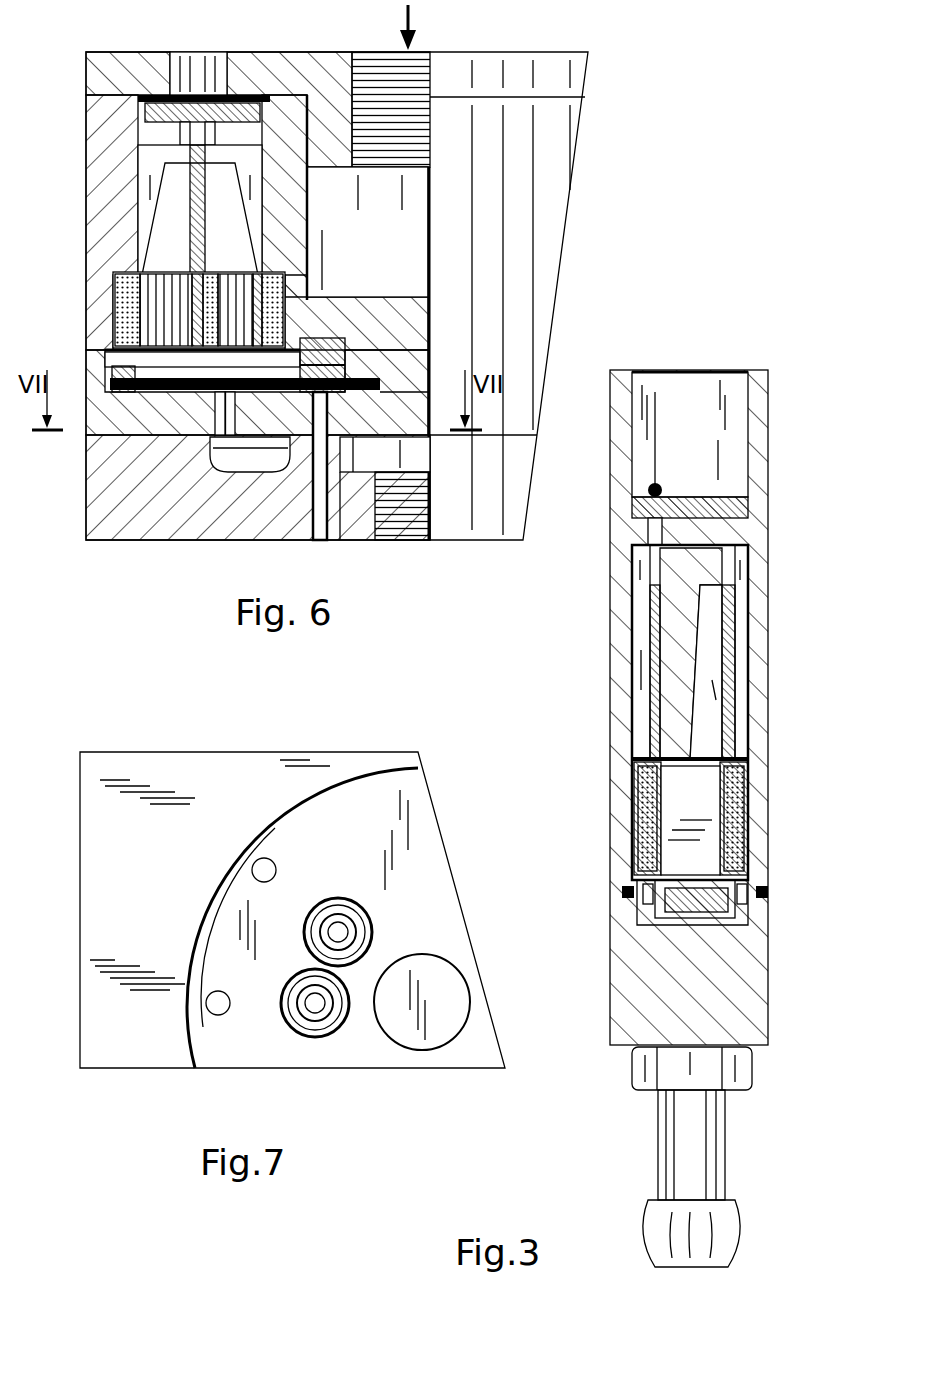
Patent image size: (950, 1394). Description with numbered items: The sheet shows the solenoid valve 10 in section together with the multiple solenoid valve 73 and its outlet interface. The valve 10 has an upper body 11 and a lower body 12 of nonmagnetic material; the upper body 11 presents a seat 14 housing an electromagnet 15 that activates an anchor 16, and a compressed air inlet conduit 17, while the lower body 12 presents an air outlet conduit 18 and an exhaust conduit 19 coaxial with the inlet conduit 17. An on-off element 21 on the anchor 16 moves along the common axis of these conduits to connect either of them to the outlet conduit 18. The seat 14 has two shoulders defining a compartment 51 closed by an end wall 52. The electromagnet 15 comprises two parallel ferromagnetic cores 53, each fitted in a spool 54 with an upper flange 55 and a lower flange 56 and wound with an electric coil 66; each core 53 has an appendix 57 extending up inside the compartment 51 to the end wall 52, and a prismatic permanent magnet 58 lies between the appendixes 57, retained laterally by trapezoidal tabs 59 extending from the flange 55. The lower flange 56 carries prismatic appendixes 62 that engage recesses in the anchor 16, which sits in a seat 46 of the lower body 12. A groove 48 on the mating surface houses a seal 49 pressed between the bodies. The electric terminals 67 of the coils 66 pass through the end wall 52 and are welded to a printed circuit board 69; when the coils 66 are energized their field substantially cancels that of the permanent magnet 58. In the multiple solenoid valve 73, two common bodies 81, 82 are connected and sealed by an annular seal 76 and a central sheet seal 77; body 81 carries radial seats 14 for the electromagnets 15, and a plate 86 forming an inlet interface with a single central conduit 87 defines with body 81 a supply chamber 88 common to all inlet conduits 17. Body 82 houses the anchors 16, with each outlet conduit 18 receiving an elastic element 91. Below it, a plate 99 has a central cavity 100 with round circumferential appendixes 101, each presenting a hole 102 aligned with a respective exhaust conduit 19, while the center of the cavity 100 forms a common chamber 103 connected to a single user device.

In FIG. 3, the three-way solenoid valve 10 is at (797, 750).
In FIG. 3, the upper body 11 is at (755, 607).
In FIG. 3, the lower body 12 is at (750, 1010).
In FIG. 3, the seat 14 is at (635, 836).
In FIG. 6, the electromagnet 15 is at (110, 302).
In FIG. 3, the electromagnet 15 is at (757, 812).
In FIG. 6, the anchor 16 is at (170, 375).
In FIG. 3, the anchor 16 is at (660, 928).
In FIG. 6, the compressed air inlet conduit 17 is at (318, 338).
In FIG. 6, the air outlet conduit 18 is at (237, 415).
In FIG. 6, the exhaust conduit 19 is at (365, 410).
In FIG. 3, the exhaust conduit 19 is at (655, 1135).
In FIG. 6, the on-off element 21 is at (348, 340).
In FIG. 3, the seat 46 is at (763, 903).
In FIG. 3, the groove 48 is at (770, 896).
In FIG. 3, the seal 49 is at (633, 900).
In FIG. 3, the compartment 51 is at (750, 577).
In FIG. 3, the end wall 52 is at (750, 513).
In FIG. 3, the core 53 is at (670, 792).
In FIG. 3, the spool 54 is at (757, 840).
In FIG. 3, the upper flange 55 is at (648, 766).
In FIG. 3, the lower flange 56 is at (643, 878).
In FIG. 3, the appendix 57 is at (707, 710).
In FIG. 6, the permanent magnet 58 is at (187, 197).
In FIG. 3, the permanent magnet 58 is at (687, 670).
In FIG. 3, the tab 59 is at (650, 620).
In FIG. 3, the prismatic appendix 62 is at (747, 880).
In FIG. 3, the electric coil 66 is at (667, 805).
In FIG. 3, the electric terminal 67 is at (660, 452).
In FIG. 6, the printed circuit board 69 is at (152, 110).
In FIG. 6, the multiple solenoid valve 73 is at (430, 545).
In FIG. 6, the annular seal 76 is at (100, 350).
In FIG. 6, the central sheet seal 77 is at (395, 338).
In FIG. 6, the body 81 is at (100, 143).
In FIG. 6, the body 82 is at (408, 383).
In FIG. 6, the plate 86 is at (103, 73).
In FIG. 6, the central conduit 87 is at (388, 146).
In FIG. 6, the supply chamber 88 is at (310, 226).
In FIG. 6, the elastic element 91 is at (113, 385).
In FIG. 6, the plate 99 is at (110, 497).
In FIG. 7, the plate 99 is at (107, 875).
In FIG. 6, the central cavity 100 is at (413, 452).
In FIG. 7, the central cavity 100 is at (410, 842).
In FIG. 6, the round circumferential appendix 101 is at (343, 457).
In FIG. 7, the round circumferential appendix 101 is at (348, 897).
In FIG. 6, the hole 102 is at (318, 535).
In FIG. 7, the hole 102 is at (303, 1038).
In FIG. 6, the common chamber 103 is at (390, 512).
In FIG. 7, the common chamber 103 is at (430, 1048).